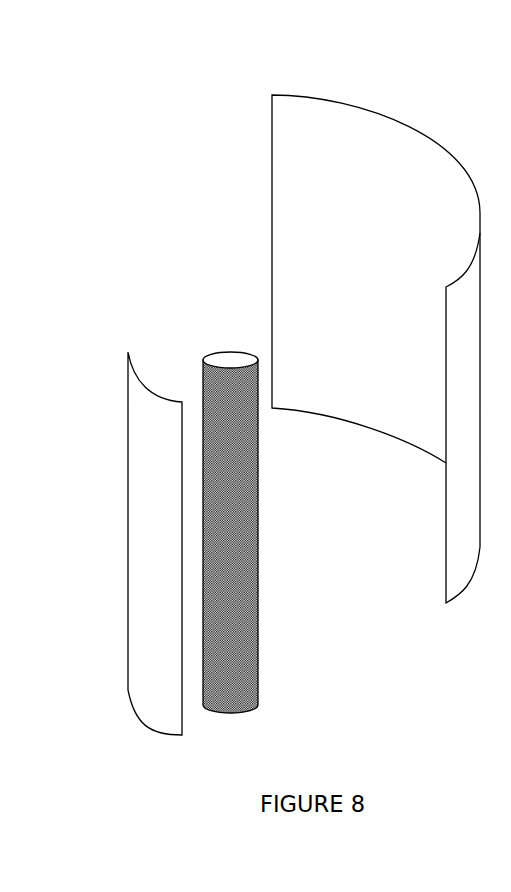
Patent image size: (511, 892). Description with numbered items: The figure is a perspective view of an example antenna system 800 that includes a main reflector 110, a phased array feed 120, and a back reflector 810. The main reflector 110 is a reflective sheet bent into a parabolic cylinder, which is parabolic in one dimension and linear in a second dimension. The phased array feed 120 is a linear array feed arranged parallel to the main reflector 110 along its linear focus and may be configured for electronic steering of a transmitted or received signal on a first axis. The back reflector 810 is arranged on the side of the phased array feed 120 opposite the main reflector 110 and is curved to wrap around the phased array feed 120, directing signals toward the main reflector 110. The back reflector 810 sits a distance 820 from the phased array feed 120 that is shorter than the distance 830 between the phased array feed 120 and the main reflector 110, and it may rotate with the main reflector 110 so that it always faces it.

The main reflector 110 is at (417, 130).
The phased array feed 120 is at (258, 547).
The back reflector 810 is at (128, 410).
The distance 820 is at (230, 713).
The distance 830 is at (446, 610).
The antenna system 800 is at (322, 786).